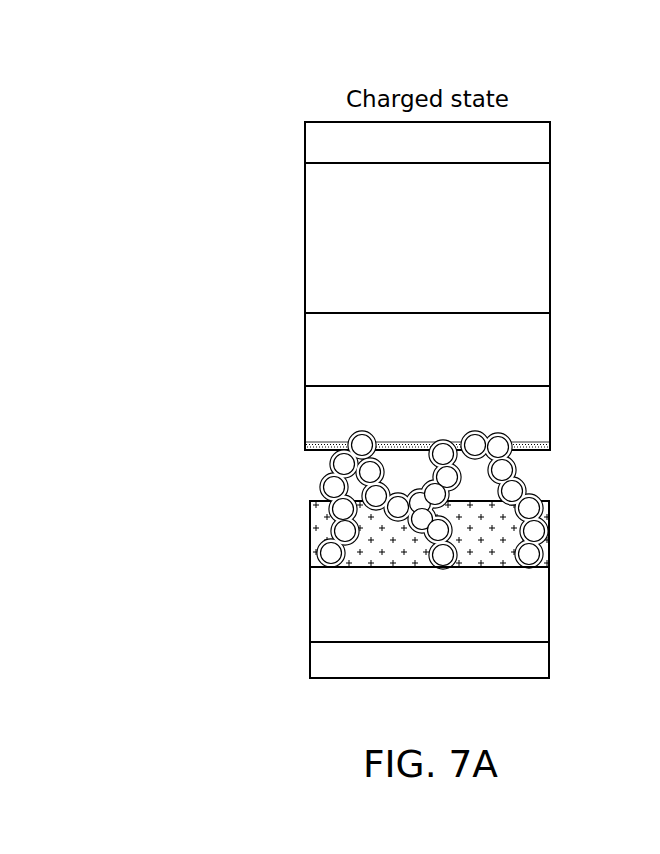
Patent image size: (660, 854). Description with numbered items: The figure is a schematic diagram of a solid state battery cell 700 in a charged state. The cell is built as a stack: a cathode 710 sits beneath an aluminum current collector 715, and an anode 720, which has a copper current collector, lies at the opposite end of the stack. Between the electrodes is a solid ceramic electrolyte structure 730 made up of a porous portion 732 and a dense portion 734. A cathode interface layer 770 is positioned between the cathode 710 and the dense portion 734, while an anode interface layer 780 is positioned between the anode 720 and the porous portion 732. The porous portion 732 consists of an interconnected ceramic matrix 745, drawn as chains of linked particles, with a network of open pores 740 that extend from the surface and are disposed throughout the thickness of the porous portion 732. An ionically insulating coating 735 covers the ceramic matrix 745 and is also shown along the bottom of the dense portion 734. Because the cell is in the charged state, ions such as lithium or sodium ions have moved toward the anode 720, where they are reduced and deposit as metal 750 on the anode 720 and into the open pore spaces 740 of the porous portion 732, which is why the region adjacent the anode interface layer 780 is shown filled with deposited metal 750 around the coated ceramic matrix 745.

The battery cell 700 is at (345, 62).
The aluminum current collector 715 is at (552, 144).
The cathode 710 is at (552, 229).
The cathode interface layer 770 is at (552, 356).
The dense portion 734 is at (552, 405).
The ionically insulating coating 735 is at (552, 443).
The solid ceramic electrolyte structure 730 is at (215, 428).
The porous portion 732 is at (284, 484).
The ceramic matrix 745 is at (508, 491).
The open pores 740 is at (407, 465).
The metal 750 is at (313, 560).
The anode interface layer 780 is at (552, 612).
The anode 720 is at (552, 659).